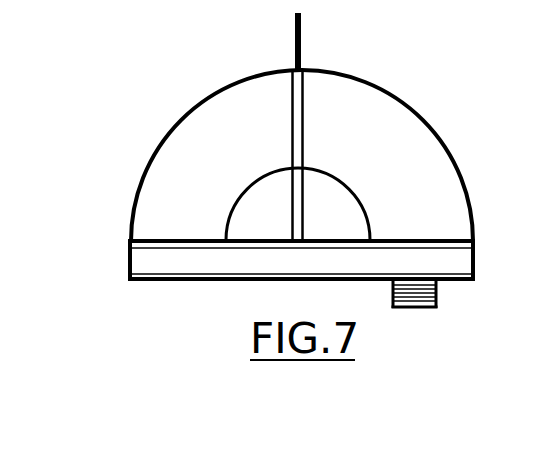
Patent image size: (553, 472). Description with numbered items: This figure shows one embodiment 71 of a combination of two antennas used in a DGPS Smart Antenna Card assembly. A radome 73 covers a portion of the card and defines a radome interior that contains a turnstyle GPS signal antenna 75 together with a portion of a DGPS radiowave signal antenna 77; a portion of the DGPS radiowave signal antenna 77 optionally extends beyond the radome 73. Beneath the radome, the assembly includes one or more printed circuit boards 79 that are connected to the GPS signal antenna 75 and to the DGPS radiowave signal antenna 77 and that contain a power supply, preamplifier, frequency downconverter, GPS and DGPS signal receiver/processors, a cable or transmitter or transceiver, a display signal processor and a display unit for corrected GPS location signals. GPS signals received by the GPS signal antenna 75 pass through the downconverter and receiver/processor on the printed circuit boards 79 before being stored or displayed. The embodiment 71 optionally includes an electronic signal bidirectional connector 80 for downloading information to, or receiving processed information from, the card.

The embodiment of a combination of the two antennas 71 is at (228, 74).
The radome 73 is at (417, 110).
The turnstyle GPS signal antenna 75 is at (352, 193).
The DGPS radiowave signal antenna 77 is at (302, 48).
The printed circuit boards 79 is at (131, 242).
The electronic signal bidirectional connector 80 is at (438, 296).